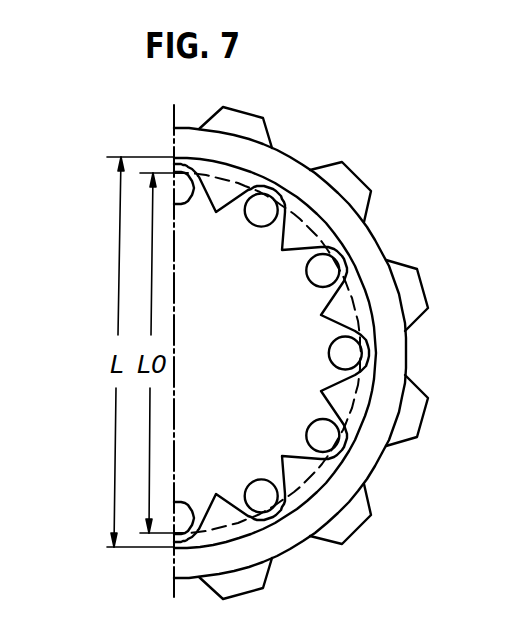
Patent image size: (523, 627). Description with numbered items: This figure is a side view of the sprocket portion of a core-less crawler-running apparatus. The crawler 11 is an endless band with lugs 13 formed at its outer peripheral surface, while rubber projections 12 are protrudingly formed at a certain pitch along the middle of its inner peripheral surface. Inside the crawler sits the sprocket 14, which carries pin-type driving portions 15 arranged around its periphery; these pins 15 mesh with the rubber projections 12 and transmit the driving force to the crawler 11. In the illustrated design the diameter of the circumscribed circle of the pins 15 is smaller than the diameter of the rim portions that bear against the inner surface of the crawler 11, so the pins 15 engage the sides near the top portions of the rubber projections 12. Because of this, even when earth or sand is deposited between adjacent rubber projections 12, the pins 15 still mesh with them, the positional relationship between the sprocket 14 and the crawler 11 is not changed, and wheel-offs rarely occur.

The crawler 11 is at (367, 250).
The rubber projections 12 is at (330, 318).
The lugs 13 is at (247, 122).
The sprocket 14 is at (206, 374).
The pin-type driving portions 15 is at (257, 220).